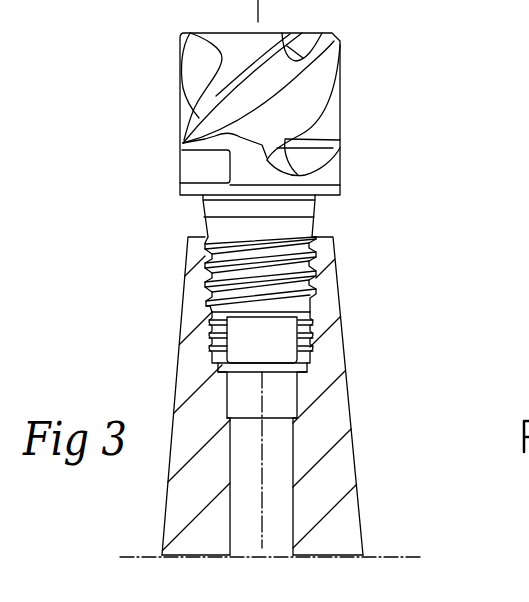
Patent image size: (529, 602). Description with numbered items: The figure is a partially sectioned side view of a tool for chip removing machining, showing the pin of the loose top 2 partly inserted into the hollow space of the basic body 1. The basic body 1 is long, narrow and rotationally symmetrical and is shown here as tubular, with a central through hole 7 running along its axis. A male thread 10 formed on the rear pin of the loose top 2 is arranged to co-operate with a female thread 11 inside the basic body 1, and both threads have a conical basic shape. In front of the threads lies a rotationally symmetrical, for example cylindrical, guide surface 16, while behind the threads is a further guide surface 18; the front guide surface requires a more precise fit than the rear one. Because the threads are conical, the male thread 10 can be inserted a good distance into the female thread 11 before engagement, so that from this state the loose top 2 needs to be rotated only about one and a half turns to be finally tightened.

The basic body 1 is at (374, 527).
The loose top 2 is at (359, 118).
The central through hole 7 is at (291, 447).
The male thread 10 is at (207, 278).
The female thread 11 is at (305, 347).
The guide surface 16 is at (313, 203).
The guide surface 18 is at (277, 349).